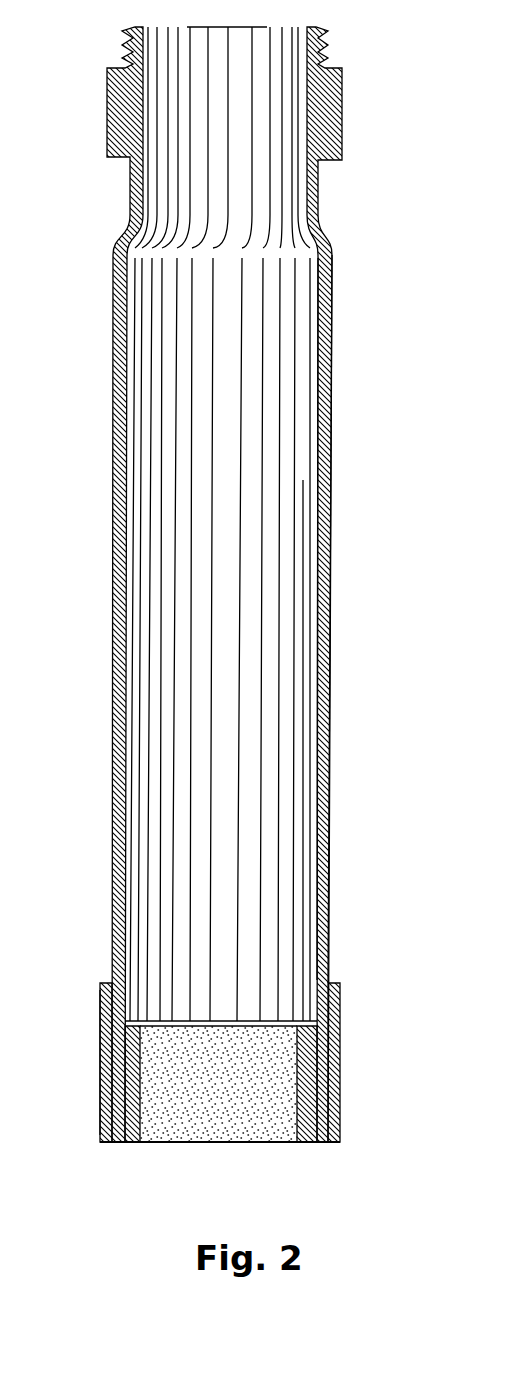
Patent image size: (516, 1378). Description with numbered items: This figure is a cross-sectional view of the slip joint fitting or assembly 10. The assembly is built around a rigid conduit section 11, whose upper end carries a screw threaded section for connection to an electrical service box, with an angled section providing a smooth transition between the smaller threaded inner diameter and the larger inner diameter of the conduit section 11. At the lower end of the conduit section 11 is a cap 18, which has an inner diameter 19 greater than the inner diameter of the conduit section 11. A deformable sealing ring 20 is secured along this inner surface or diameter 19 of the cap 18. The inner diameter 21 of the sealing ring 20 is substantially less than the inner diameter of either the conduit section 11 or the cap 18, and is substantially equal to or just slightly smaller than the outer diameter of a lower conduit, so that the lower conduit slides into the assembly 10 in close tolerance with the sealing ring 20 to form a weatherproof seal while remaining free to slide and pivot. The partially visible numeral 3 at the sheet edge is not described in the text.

The slip joint fitting assembly 10 is at (390, 662).
The rigid conduit section 11 is at (333, 300).
The cap 18 is at (318, 315).
The inner diameter of cap 19 is at (350, 1080).
The deformable sealing ring 20 is at (122, 1130).
The inner diameter of sealing ring 21 is at (292, 1085).
The partial reference 3 is at (5, 859).